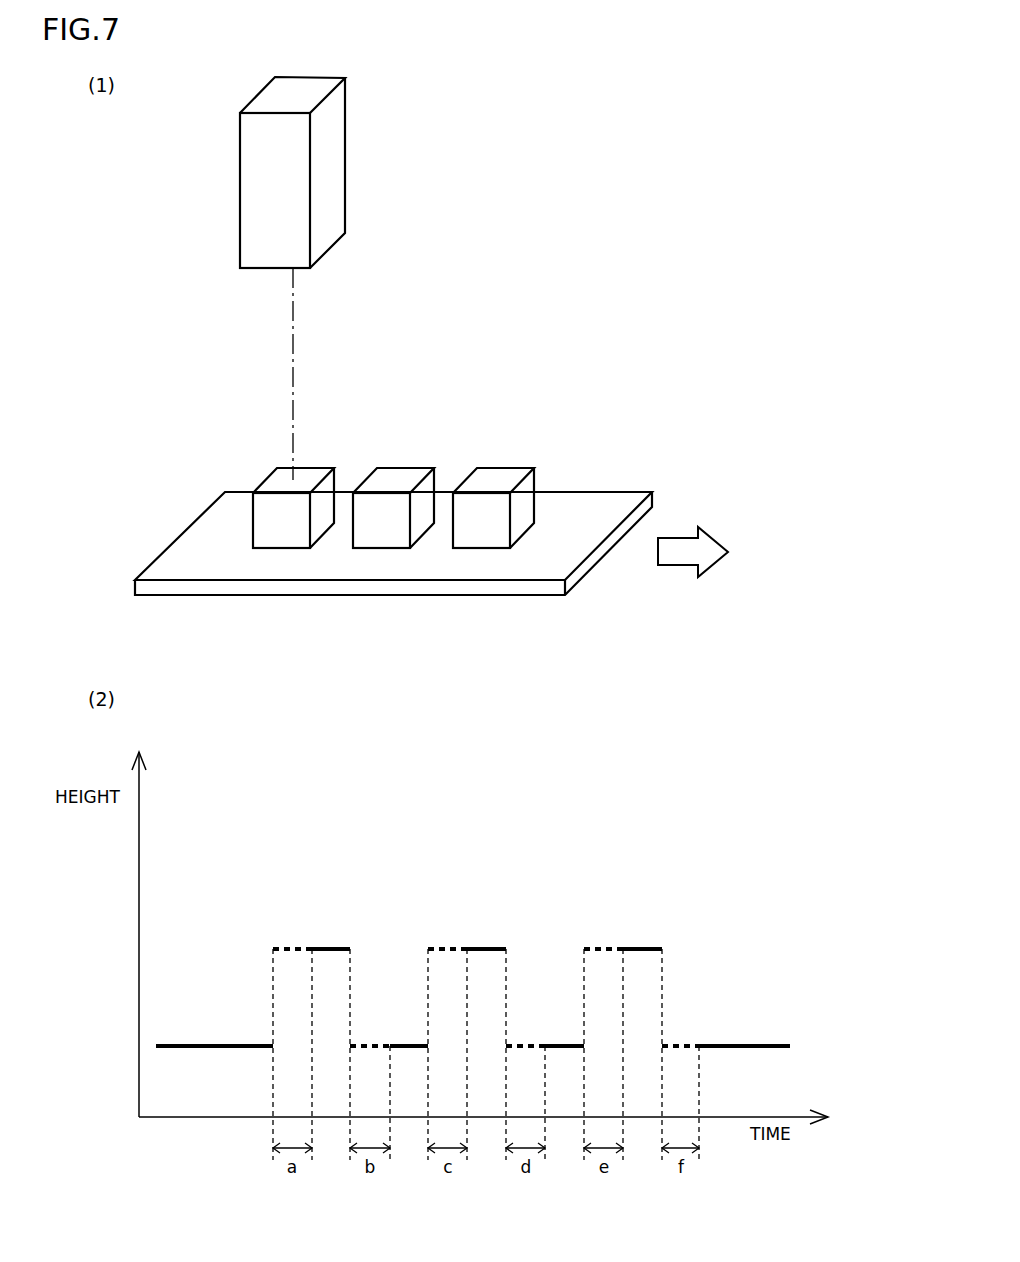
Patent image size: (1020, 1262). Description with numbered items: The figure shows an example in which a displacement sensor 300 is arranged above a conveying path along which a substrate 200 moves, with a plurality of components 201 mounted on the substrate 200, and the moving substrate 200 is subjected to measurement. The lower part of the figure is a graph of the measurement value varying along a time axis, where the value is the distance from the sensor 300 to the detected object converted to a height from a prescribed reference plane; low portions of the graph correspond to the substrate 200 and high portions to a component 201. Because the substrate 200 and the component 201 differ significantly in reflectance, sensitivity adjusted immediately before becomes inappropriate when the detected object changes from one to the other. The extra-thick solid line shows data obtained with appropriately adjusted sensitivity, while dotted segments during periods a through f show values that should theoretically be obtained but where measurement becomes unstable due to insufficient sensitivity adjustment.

The displacement sensor 300 is at (333, 155).
The component 201 is at (495, 477).
The substrate 200 is at (602, 510).